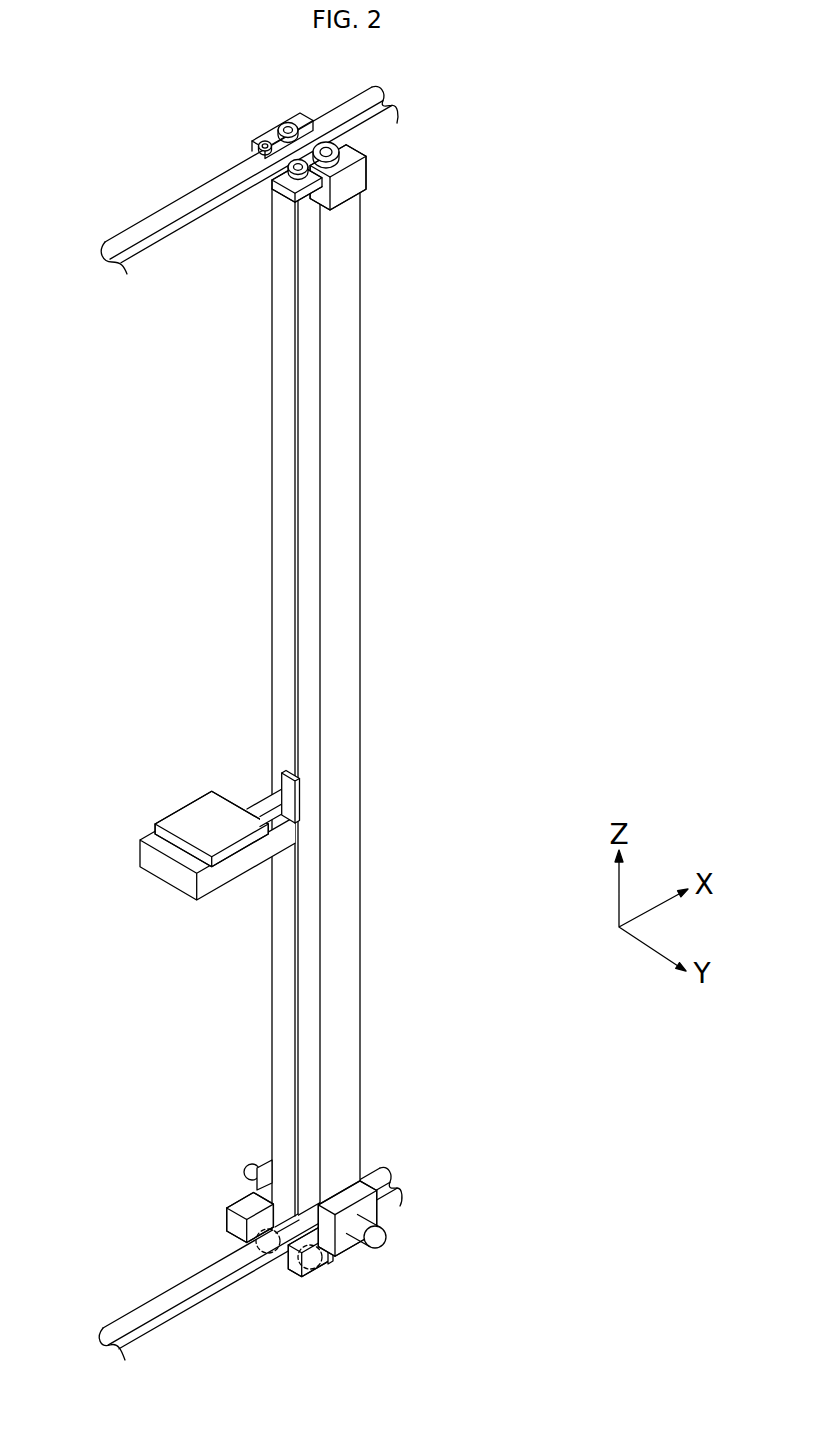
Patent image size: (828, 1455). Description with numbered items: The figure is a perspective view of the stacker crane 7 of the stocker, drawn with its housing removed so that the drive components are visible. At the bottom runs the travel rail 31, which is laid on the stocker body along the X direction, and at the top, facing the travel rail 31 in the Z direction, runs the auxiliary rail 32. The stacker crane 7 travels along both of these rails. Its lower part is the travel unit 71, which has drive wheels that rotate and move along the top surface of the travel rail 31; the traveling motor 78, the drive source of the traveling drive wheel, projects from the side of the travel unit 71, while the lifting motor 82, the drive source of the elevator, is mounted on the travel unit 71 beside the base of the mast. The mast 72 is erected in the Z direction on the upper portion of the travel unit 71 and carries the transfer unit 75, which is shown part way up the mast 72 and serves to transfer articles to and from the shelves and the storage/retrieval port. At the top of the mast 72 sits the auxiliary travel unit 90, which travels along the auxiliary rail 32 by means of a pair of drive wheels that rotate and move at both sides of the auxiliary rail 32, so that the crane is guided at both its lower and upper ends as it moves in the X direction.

The stacker crane 7 is at (327, 709).
The travel rail 31 is at (160, 1310).
The auxiliary rail 32 is at (157, 245).
The travel unit 71 is at (227, 1176).
The mast 72 is at (272, 617).
The transfer unit 75 is at (174, 789).
The traveling motor 78 is at (381, 1244).
The lifting motor 82 is at (252, 1168).
The auxiliary travel unit 90 is at (380, 176).